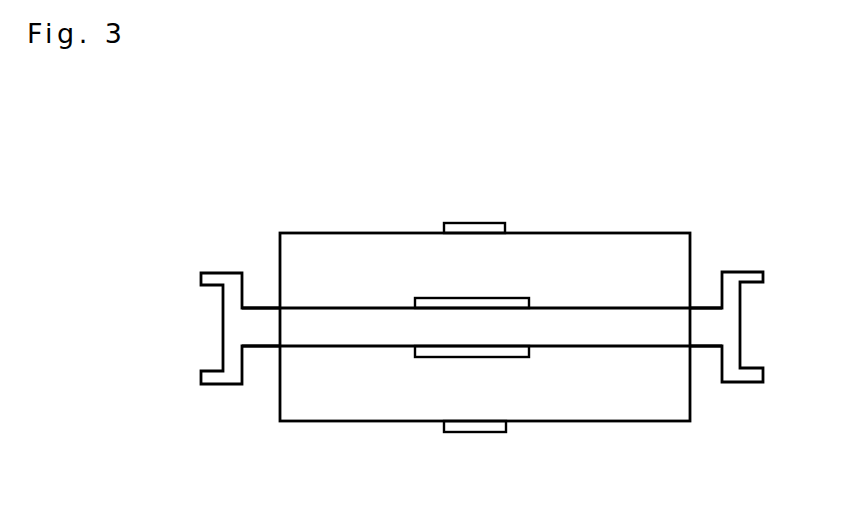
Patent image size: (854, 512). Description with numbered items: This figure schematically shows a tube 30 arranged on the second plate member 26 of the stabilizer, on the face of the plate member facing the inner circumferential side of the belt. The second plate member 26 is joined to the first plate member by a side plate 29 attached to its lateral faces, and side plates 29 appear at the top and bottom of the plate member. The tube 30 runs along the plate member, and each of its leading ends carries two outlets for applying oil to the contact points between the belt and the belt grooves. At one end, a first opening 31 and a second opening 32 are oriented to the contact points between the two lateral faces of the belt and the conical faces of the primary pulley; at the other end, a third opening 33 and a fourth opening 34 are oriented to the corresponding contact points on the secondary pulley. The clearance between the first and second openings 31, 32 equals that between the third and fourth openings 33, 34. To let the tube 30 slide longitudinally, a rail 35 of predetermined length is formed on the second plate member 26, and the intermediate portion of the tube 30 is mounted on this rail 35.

The second plate member 26 is at (607, 410).
The side plate 29 is at (480, 223).
The tube 30 is at (358, 332).
The first opening 31 is at (201, 282).
The second opening 32 is at (201, 377).
The third opening 33 is at (765, 277).
The fourth opening 34 is at (765, 372).
The rail 35 is at (443, 353).